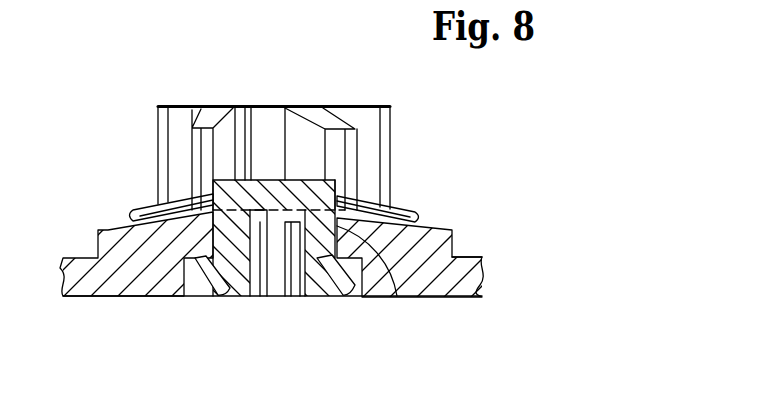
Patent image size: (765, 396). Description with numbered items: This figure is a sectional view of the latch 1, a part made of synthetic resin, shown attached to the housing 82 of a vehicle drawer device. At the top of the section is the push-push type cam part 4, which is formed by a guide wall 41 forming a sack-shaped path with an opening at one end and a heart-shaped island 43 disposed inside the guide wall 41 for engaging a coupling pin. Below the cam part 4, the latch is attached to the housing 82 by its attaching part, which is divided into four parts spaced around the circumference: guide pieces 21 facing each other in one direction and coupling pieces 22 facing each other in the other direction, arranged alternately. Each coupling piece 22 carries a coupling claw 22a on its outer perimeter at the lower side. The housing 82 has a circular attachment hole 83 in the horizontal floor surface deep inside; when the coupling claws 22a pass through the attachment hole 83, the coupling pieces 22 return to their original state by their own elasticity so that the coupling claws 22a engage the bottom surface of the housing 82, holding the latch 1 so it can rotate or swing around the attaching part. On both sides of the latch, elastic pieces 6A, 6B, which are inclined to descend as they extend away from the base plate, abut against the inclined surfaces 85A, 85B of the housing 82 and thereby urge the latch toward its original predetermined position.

The latch 1 is at (393, 140).
The cam part 4 is at (190, 106).
The guide wall 41 is at (362, 118).
The heart-shaped island 43 is at (272, 124).
The elastic piece 6A is at (132, 208).
The elastic piece 6B is at (400, 208).
The guide piece 21 is at (278, 252).
The coupling piece 22 is at (234, 242).
The coupling claw 22a is at (211, 272).
The housing 82 is at (466, 263).
The attachment hole 83 is at (340, 224).
The inclined surface 85A is at (110, 227).
The inclined surface 85B is at (430, 223).